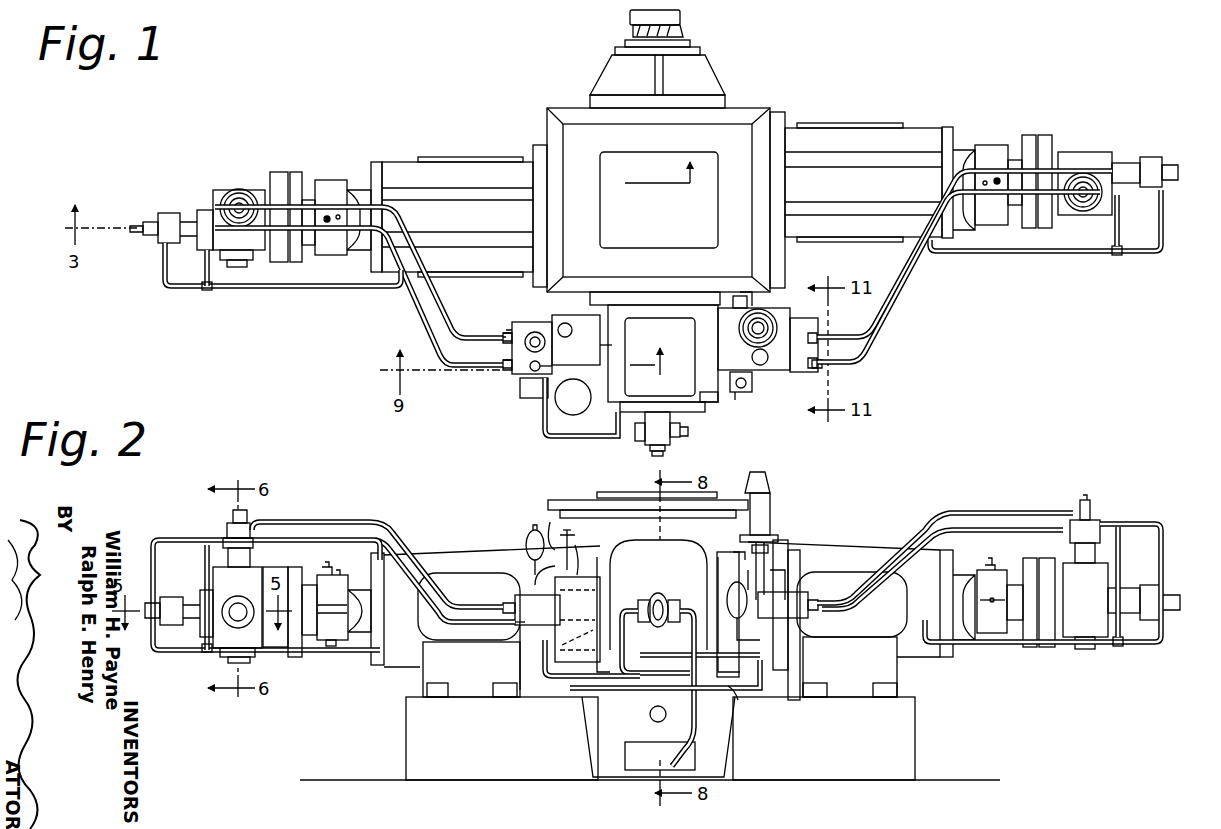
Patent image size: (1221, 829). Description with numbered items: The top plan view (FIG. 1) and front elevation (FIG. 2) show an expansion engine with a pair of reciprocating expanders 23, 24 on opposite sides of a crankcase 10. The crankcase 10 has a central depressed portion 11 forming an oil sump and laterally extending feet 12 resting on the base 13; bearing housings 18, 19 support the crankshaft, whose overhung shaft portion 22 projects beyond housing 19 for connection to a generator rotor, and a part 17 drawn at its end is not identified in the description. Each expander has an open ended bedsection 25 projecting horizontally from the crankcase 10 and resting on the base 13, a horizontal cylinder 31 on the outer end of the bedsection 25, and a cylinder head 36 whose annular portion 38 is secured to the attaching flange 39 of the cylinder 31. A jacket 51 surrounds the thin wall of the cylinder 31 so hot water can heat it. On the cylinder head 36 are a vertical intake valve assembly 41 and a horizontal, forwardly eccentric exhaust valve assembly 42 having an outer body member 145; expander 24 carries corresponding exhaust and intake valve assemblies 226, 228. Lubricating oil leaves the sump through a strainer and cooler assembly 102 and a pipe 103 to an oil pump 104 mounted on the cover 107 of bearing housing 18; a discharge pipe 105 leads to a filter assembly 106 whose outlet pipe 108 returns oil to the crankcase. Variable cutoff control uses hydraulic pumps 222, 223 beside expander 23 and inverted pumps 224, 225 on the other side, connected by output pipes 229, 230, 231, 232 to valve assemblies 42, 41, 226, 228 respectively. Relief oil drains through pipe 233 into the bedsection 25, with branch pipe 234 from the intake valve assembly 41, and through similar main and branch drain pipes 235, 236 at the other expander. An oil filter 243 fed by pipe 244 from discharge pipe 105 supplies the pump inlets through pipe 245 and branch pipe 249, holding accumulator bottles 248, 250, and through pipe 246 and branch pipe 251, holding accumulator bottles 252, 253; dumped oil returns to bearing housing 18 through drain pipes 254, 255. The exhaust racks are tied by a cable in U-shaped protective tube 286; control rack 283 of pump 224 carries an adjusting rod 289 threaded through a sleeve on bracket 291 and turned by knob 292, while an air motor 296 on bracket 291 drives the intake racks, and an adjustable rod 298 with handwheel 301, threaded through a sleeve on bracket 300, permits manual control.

In FIG. 1, the crankcase 10 is at (768, 110).
In FIG. 2, the crankcase 10 is at (568, 496).
In FIG. 2, the central depressed portion 11 is at (722, 746).
In FIG. 2, the laterally extending feet 12 is at (555, 697).
In FIG. 2, the base or foundation 13 is at (406, 745).
In FIG. 1, the handle 17 is at (628, 18).
In FIG. 1, the bearing housing 18 is at (637, 305).
In FIG. 2, the bearing housing 18 is at (665, 545).
In FIG. 1, the bearing housing 19 is at (697, 65).
In FIG. 1, the overhung shaft portion 22 is at (683, 30).
In FIG. 1, the reciprocating expander 23 is at (278, 125).
In FIG. 2, the reciprocating expander 23 is at (288, 675).
In FIG. 1, the reciprocating expander 24 is at (1026, 122).
In FIG. 2, the reciprocating expander 24 is at (1050, 668).
In FIG. 1, the bedsection 25 is at (400, 160).
In FIG. 2, the bedsection 25 is at (458, 548).
In FIG. 1, the cylinder 31 is at (362, 186).
In FIG. 2, the cylinder 31 is at (362, 578).
In FIG. 1, the cylinder head 36 is at (214, 190).
In FIG. 2, the cylinder head 36 is at (268, 580).
In FIG. 1, the annular portion 38 is at (278, 172).
In FIG. 2, the annular portion 38 is at (282, 612).
In FIG. 1, the annular attaching flange 39 is at (298, 172).
In FIG. 1, the intake or admission valve assembly 41 is at (240, 188).
In FIG. 2, the intake or admission valve assembly 41 is at (250, 510).
In FIG. 1, the exhaust valve assembly 42 is at (168, 212).
In FIG. 2, the exhaust valve assembly 42 is at (160, 628).
In FIG. 1, the jacket 51 is at (333, 180).
In FIG. 2, the jacket 51 is at (325, 604).
In FIG. 2, the strainer and cooler assembly 102 is at (700, 762).
In FIG. 1, the pipe 103 is at (682, 434).
In FIG. 2, the pipe 103 is at (686, 604).
In FIG. 1, the oil pump 104 is at (665, 450).
In FIG. 2, the oil pump 104 is at (660, 594).
In FIG. 1, the discharge pipe 105 is at (637, 438).
In FIG. 2, the discharge pipe 105 is at (630, 605).
In FIG. 2, the filter assembly 106 is at (660, 655).
In FIG. 1, the cover 107 is at (624, 408).
In FIG. 2, the cover 107 is at (702, 565).
In FIG. 2, the pipe 108 is at (698, 720).
In FIG. 1, the outer body member 145 is at (192, 242).
In FIG. 2, the outer body member 145 is at (197, 622).
In FIG. 1, the hydraulic pump 222 is at (510, 376).
In FIG. 2, the hydraulic pump 222 is at (500, 606).
In FIG. 1, the hydraulic pump 223 is at (510, 325).
In FIG. 1, the hydraulic pump 224 is at (823, 367).
In FIG. 2, the hydraulic pump 224 is at (812, 598).
In FIG. 1, the hydraulic pump 225 is at (806, 317).
In FIG. 1, the exhaust valve assembly 226 is at (1167, 155).
In FIG. 2, the exhaust valve assembly 226 is at (1165, 585).
In FIG. 1, the intake valve assembly 228 is at (1083, 214).
In FIG. 2, the intake valve assembly 228 is at (1098, 511).
In FIG. 1, the output pipe 229 is at (425, 300).
In FIG. 2, the output pipe 229 is at (335, 545).
In FIG. 1, the output pipe 230 is at (430, 300).
In FIG. 2, the output pipe 230 is at (403, 515).
In FIG. 1, the output pipe 231 is at (888, 333).
In FIG. 2, the output pipe 231 is at (962, 528).
In FIG. 1, the output pipe 232 is at (893, 293).
In FIG. 2, the output pipe 232 is at (1007, 497).
In FIG. 1, the drain pipe 233 is at (284, 287).
In FIG. 2, the drain pipe 233 is at (337, 652).
In FIG. 1, the branch pipe 234 is at (205, 280).
In FIG. 2, the branch pipe 234 is at (207, 572).
In FIG. 1, the main drain pipe 235 is at (1063, 252).
In FIG. 2, the main drain pipe 235 is at (990, 645).
In FIG. 1, the branch drain pipe 236 is at (1122, 228).
In FIG. 2, the branch drain pipe 236 is at (1120, 556).
In FIG. 1, the oil filter 243 is at (573, 397).
In FIG. 2, the oil filter 243 is at (578, 576).
In FIG. 1, the pipe 244 is at (540, 437).
In FIG. 2, the pipe 244 is at (598, 680).
In FIG. 1, the pipe 245 is at (530, 400).
In FIG. 2, the pipe 245 is at (540, 705).
In FIG. 1, the pipe 246 is at (736, 400).
In FIG. 2, the pipe 246 is at (630, 690).
In FIG. 1, the accumulator bottle 248 is at (545, 370).
In FIG. 2, the accumulator bottle 248 is at (528, 532).
In FIG. 1, the branch pipe 249 is at (532, 320).
In FIG. 1, the accumulator bottle 250 is at (552, 320).
In FIG. 1, the branch pipe 251 is at (713, 403).
In FIG. 2, the branch pipe 251 is at (736, 700).
In FIG. 1, the accumulator bottle 252 is at (753, 385).
In FIG. 2, the accumulator bottle 252 is at (740, 583).
In FIG. 1, the accumulator bottle 253 is at (740, 300).
In FIG. 2, the drain pipe 254 is at (524, 623).
In FIG. 2, the main drain pipe 255 is at (788, 605).
In FIG. 2, the control rack 283 is at (785, 592).
In FIG. 2, the protective tube 286 is at (650, 720).
In FIG. 2, the adjusting rod 289 is at (745, 556).
In FIG. 1, the bracket 291 is at (748, 305).
In FIG. 2, the bracket 291 is at (790, 560).
In FIG. 1, the handwheel or knob 292 is at (752, 357).
In FIG. 2, the handwheel or knob 292 is at (773, 524).
In FIG. 1, the air motor 296 is at (740, 326).
In FIG. 2, the air motor 296 is at (774, 512).
In FIG. 2, the adjustable rod 298 is at (550, 520).
In FIG. 1, the bracket 300 is at (600, 348).
In FIG. 2, the bracket 300 is at (580, 543).
In FIG. 1, the handwheel 301 is at (578, 340).
In FIG. 2, the handwheel 301 is at (567, 532).